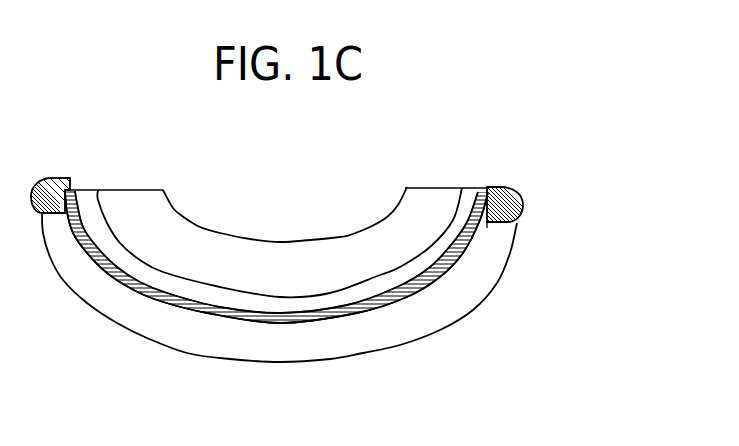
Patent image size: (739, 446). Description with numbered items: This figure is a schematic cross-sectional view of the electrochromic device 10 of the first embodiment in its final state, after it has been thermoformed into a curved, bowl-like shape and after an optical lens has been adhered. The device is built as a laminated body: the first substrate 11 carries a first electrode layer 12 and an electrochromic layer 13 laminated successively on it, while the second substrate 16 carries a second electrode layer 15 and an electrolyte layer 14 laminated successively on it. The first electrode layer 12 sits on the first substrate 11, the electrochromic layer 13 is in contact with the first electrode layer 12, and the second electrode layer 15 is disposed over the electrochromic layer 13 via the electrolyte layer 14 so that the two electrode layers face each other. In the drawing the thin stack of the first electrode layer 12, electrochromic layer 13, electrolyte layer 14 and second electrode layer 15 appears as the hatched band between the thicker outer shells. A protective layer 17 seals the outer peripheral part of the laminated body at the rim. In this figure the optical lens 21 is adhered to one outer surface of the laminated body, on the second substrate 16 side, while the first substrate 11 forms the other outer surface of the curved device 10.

The electrochromic device 10 is at (309, 150).
The first substrate 11 is at (448, 308).
The first electrode layer 12 is at (440, 268).
The electrochromic layer 13 is at (276, 257).
The electrolyte layer 14 is at (276, 252).
The second electrode layer 15 is at (276, 257).
The second substrate 16 is at (472, 197).
The protective layer 17 is at (57, 177).
The optical lens 21 is at (419, 195).